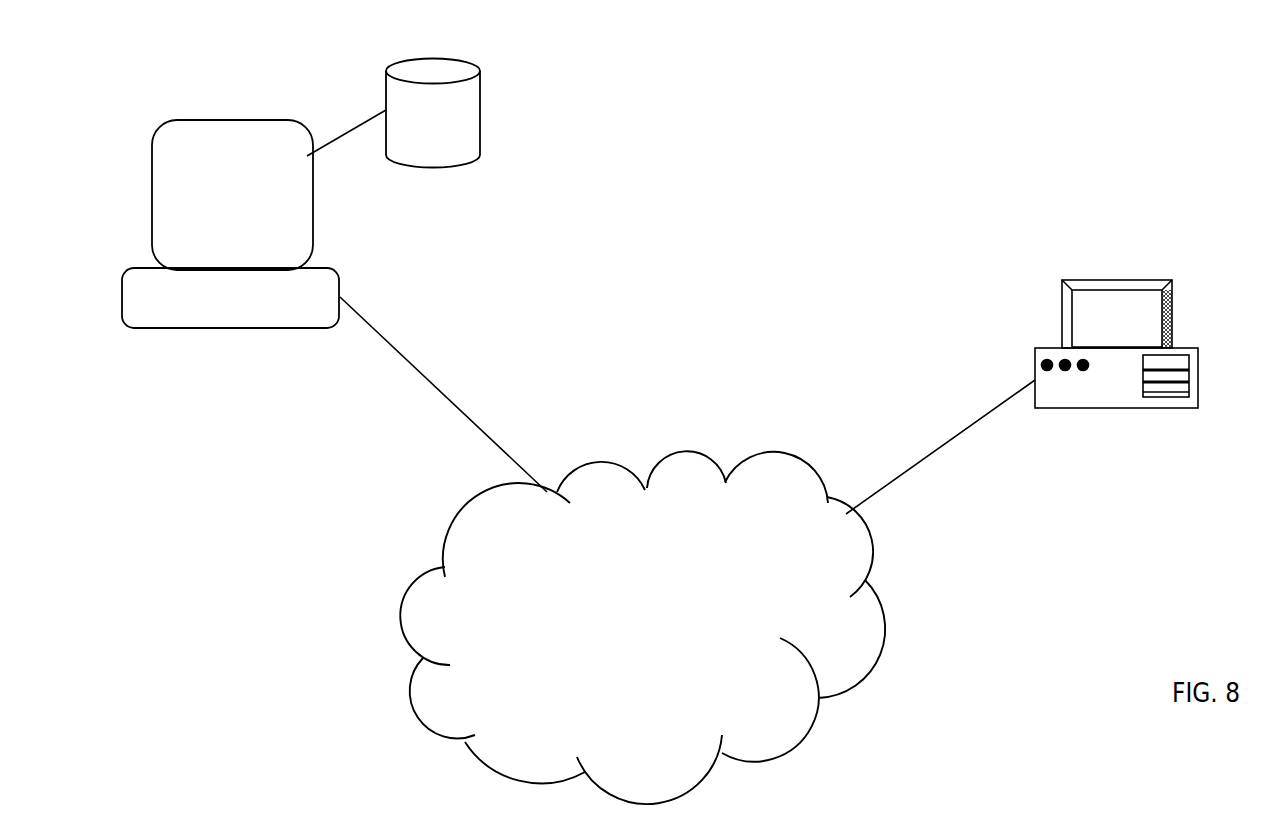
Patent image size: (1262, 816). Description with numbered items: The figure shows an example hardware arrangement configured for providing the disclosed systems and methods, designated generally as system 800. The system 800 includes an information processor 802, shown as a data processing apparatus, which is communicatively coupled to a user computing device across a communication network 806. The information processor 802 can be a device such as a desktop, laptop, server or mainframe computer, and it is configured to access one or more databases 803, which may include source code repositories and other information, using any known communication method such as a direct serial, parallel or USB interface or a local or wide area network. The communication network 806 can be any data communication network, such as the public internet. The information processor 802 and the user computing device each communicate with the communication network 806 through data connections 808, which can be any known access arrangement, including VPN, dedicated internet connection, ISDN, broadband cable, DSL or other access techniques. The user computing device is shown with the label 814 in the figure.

The system 800 is at (1129, 214).
The information processor 802 is at (137, 260).
The database 803 is at (395, 95).
The communication network 806 is at (422, 587).
The data connection 808 is at (504, 450).
The user computing device 814 is at (1062, 313).